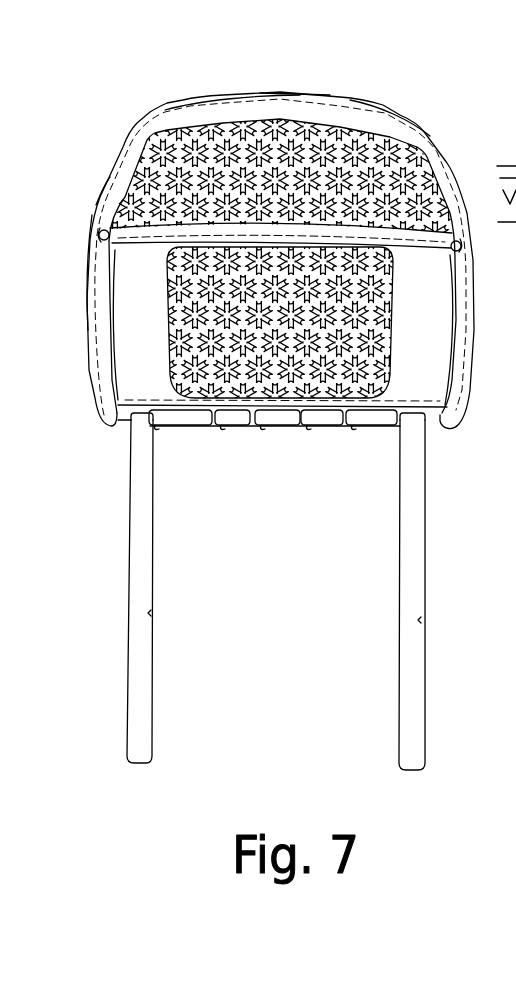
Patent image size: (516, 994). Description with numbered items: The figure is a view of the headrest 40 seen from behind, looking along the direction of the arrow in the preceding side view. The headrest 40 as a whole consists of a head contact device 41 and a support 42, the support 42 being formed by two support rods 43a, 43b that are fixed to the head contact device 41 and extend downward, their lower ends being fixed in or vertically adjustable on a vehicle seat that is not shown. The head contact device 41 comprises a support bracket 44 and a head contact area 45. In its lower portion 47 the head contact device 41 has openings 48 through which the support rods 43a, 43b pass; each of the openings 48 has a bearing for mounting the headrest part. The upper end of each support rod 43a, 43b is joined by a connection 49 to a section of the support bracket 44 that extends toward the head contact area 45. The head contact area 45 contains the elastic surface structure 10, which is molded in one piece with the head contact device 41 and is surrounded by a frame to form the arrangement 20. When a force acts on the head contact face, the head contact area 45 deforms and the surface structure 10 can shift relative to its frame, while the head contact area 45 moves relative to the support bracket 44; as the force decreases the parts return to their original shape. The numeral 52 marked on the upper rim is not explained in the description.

The surface structure 10 is at (392, 177).
The arrangement 20 is at (360, 348).
The headrest 40 is at (127, 130).
The head contact device 41 is at (230, 98).
The support 42 is at (0, 298).
The support rod 43a is at (413, 567).
The support rod 43b is at (140, 658).
The support bracket 44 is at (140, 343).
The head contact area 45 is at (293, 100).
The lower portion 47 is at (272, 432).
The openings 48 is at (138, 424).
The connection 49 is at (0, 190).
The rim shoulder 52 is at (383, 103).